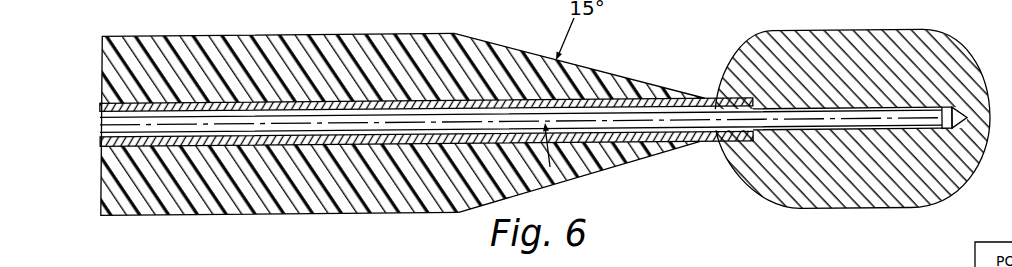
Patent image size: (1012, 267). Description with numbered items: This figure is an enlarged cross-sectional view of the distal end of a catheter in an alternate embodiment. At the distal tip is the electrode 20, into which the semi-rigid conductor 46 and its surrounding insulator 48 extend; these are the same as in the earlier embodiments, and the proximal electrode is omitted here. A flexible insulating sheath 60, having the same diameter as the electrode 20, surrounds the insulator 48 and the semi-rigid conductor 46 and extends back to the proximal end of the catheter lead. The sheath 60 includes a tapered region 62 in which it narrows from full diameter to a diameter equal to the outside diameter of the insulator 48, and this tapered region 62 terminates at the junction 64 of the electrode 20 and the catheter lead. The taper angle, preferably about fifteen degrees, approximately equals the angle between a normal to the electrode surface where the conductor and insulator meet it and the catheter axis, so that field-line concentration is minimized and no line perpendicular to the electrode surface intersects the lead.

The flexible insulating sheath 60 is at (397, 34).
The tapered region 62 is at (538, 46).
The junction 64 is at (716, 97).
The insulator 48 is at (630, 141).
The semi-rigid conductor 46 is at (688, 125).
The electrode 20 is at (848, 210).